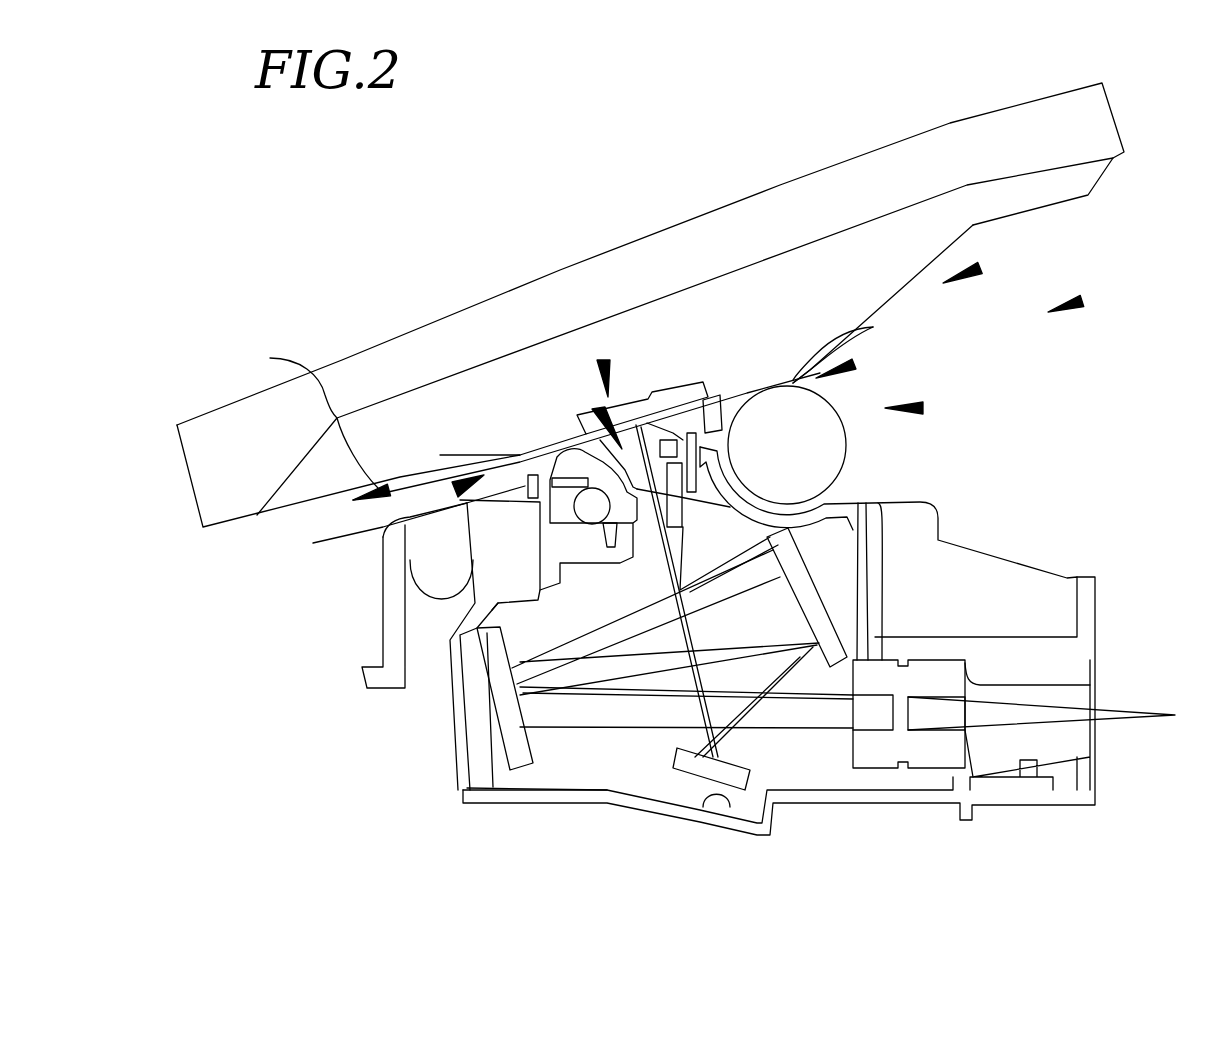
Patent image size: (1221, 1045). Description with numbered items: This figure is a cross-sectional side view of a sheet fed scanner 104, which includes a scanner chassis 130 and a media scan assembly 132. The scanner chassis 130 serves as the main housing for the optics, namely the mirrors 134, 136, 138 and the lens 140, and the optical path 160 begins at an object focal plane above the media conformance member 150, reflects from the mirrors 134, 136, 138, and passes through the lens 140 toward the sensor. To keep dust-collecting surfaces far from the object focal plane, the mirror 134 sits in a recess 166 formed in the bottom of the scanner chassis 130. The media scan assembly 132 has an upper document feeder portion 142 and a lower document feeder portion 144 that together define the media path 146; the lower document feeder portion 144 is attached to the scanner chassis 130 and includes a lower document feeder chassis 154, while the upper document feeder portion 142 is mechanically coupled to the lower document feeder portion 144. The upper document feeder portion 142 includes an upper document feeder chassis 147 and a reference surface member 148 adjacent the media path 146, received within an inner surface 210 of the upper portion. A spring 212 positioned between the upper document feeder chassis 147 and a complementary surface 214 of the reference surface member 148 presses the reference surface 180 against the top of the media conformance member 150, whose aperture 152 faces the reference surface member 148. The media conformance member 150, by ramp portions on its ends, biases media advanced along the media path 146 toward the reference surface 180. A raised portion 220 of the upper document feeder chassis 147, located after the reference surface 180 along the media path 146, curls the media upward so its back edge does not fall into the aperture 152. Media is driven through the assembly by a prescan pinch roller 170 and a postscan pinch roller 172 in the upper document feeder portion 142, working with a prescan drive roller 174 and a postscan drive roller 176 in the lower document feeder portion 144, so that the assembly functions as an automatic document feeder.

The scanner 104 is at (274, 219).
The scanner chassis 130 is at (857, 572).
The media scan assembly 132 is at (1082, 301).
The mirror 134 is at (673, 752).
The mirror 136 is at (838, 565).
The mirror 138 is at (493, 753).
The lens 140 is at (937, 672).
The upper document feeder portion 142 is at (980, 268).
The lower document feeder portion 144 is at (923, 408).
The media path 146 is at (854, 364).
The upper document feeder chassis 147 is at (478, 388).
The reference surface member 148 is at (670, 418).
The media conformance member 150 is at (650, 400).
The aperture 152 is at (622, 422).
The lower document feeder chassis 154 is at (387, 633).
The optical path 160 is at (660, 575).
The recess 166 is at (712, 795).
The prescan pinch roller 170 is at (873, 327).
The postscan pinch roller 172 is at (294, 416).
The prescan drive roller 174 is at (846, 441).
The postscan drive roller 176 is at (387, 537).
The reference surface 180 is at (713, 405).
The inner surface 210 is at (603, 362).
The spring 212 is at (597, 410).
The complementary surface 214 is at (483, 382).
The raised portion 220 is at (389, 525).